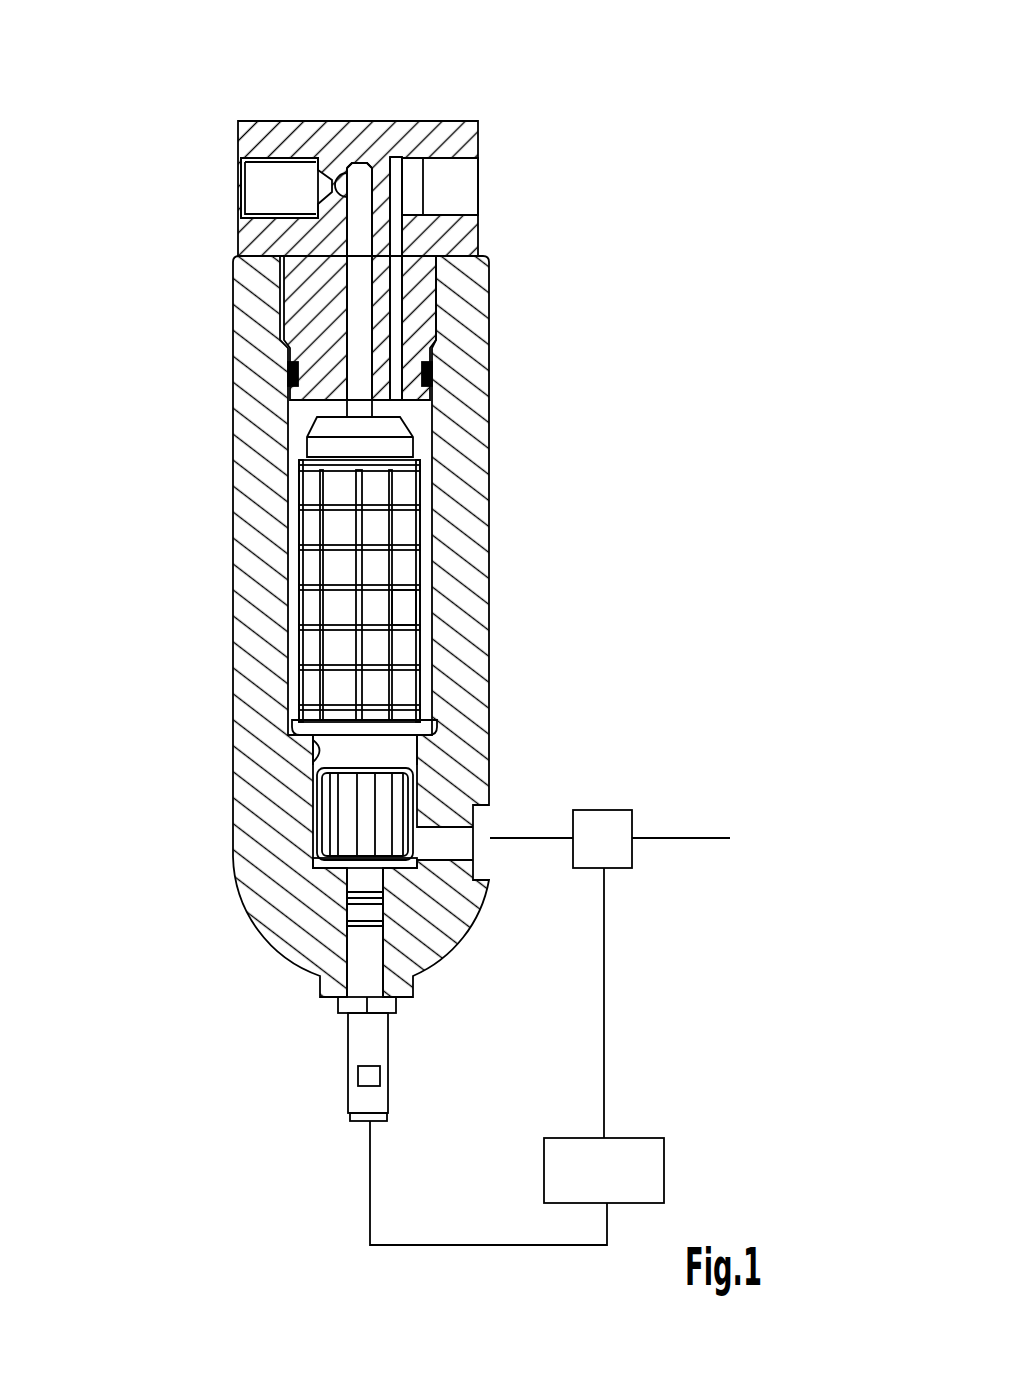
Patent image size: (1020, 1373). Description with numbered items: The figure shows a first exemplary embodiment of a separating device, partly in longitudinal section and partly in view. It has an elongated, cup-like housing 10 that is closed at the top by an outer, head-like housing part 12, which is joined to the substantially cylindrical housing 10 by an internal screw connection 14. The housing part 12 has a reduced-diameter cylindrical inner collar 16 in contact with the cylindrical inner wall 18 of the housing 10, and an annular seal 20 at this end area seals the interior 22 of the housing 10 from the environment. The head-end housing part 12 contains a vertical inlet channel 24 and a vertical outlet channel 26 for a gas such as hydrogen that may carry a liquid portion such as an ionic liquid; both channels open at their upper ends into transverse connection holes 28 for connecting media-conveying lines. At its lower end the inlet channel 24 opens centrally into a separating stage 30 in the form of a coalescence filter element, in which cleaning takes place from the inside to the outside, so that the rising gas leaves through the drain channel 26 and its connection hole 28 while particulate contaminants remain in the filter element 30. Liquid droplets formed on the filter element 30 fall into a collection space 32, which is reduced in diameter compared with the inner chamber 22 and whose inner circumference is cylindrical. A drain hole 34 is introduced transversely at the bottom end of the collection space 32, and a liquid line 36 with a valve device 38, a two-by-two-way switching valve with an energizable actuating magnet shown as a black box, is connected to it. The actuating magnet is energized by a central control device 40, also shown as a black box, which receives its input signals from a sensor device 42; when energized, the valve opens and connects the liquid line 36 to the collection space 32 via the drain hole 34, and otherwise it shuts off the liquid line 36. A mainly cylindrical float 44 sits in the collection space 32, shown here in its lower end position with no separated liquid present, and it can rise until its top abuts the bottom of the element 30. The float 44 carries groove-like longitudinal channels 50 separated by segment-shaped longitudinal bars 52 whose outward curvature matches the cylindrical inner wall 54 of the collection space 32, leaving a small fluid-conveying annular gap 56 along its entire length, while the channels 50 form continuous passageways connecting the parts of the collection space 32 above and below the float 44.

The cup-like housing 10 is at (470, 707).
The head-like housing part 12 is at (478, 128).
The internal screw connection 14 is at (440, 308).
The cylindrical inner collar 16 is at (308, 355).
The cylindrical inner wall 18 is at (420, 420).
The annular seal 20 is at (432, 372).
The interior 22 is at (427, 565).
The inlet channel 24 is at (357, 207).
The outlet channel 26 is at (402, 245).
The transverse connection holes 28 is at (262, 195).
The separating stage 30 is at (405, 613).
The collection space 32 is at (395, 752).
The drain hole 34 is at (480, 827).
The liquid line 36 is at (688, 837).
The valve device 38 is at (615, 868).
The central control device 40 is at (658, 1172).
The sensor device 42 is at (262, 1016).
The float 44 is at (335, 810).
The longitudinal channels 50 is at (375, 848).
The longitudinal bars 52 is at (440, 1000).
The inner wall 54 is at (320, 760).
The annular gap 56 is at (353, 830).